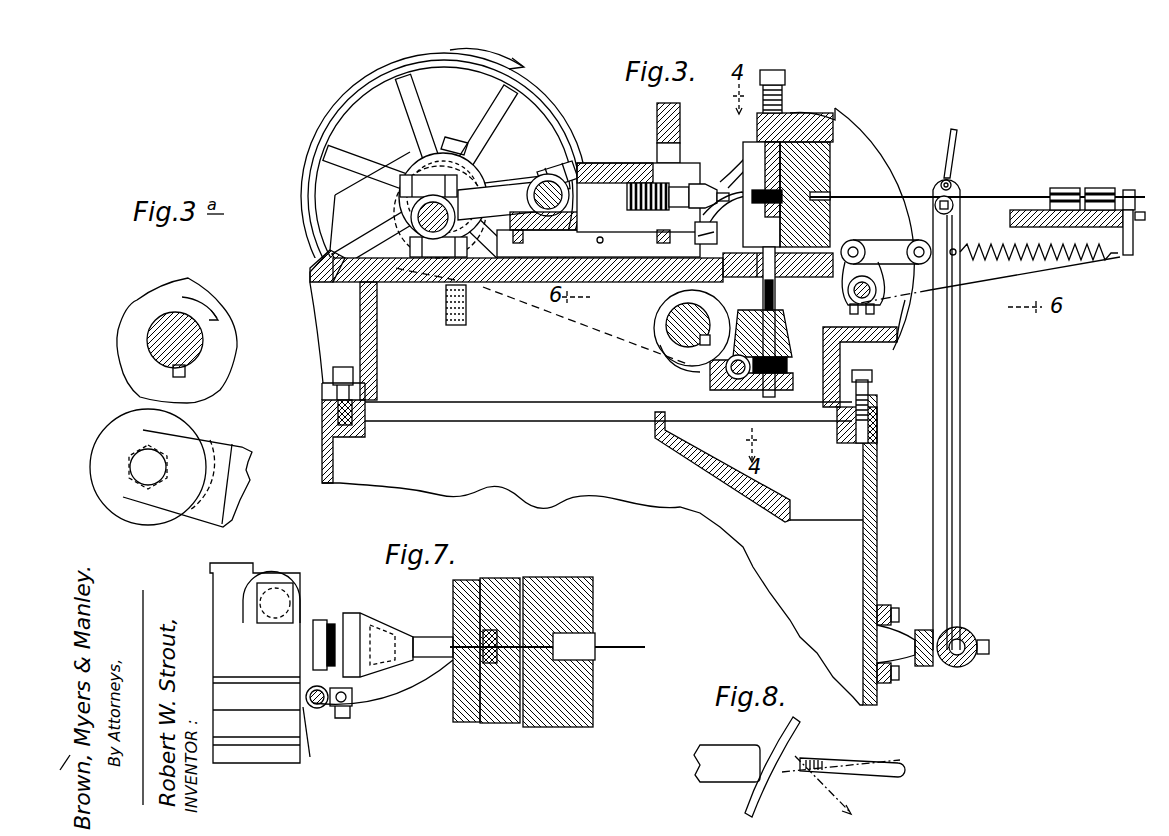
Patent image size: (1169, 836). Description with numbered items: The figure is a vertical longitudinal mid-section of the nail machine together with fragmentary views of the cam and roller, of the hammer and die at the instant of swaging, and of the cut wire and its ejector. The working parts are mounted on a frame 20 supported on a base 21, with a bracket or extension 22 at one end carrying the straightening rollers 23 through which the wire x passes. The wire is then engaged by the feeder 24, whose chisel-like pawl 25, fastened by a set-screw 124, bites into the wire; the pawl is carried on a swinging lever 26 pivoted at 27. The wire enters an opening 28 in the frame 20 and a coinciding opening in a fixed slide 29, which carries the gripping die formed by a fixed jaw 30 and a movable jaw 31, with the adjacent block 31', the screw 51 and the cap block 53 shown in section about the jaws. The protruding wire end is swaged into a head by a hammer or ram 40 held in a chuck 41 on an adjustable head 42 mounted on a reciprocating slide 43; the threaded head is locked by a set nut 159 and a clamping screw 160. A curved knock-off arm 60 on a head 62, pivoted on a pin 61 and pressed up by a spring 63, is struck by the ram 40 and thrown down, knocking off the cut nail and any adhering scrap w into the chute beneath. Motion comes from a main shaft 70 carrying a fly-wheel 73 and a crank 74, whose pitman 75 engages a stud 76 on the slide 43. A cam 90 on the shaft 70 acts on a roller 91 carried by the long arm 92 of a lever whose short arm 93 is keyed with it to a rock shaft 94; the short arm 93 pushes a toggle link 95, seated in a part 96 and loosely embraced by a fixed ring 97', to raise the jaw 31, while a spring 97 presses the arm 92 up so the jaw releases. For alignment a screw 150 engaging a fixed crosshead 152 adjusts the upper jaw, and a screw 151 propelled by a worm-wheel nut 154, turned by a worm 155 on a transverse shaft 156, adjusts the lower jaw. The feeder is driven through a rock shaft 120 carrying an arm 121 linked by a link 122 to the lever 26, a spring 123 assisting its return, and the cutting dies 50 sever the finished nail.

In FIG. 3, the frame 20 is at (888, 144).
In FIG. 7, the frame 20 is at (582, 690).
In FIG. 3, the base 21 is at (618, 536).
In FIG. 3, the bracket or extension 22 is at (1012, 277).
In FIG. 3, the straightening rollers 23 is at (1097, 196).
In FIG. 3, the feeder 24 is at (957, 190).
In FIG. 3, the pawl 25 is at (956, 140).
In FIG. 3, the swinging arm or lever 26 is at (957, 356).
In FIG. 3, the pivot 27 is at (950, 665).
In FIG. 3, the opening 28 is at (830, 195).
In FIG. 7, the opening 28 is at (589, 646).
In FIG. 3, the fixed slide 29 is at (826, 158).
In FIG. 7, the fixed slide 29 is at (505, 726).
In FIG. 3, the fixed jaw 30 is at (756, 154).
In FIG. 7, the fixed jaw 30 is at (455, 600).
In FIG. 3, the movable jaw 31 is at (747, 267).
In FIG. 7, the movable jaw 31 is at (462, 740).
In FIG. 3, the block 31' is at (844, 213).
In FIG. 3, the hammer or ram 40 is at (727, 193).
In FIG. 7, the hammer or ram 40 is at (418, 636).
In FIG. 8, the hammer or ram 40 is at (731, 762).
In FIG. 7, the chuck 41 is at (375, 615).
In FIG. 3, the adjustable head 42 is at (640, 180).
In FIG. 7, the adjustable head 42 is at (336, 620).
In FIG. 3, the reciprocating slide 43 is at (604, 163).
In FIG. 7, the reciprocating slide 43 is at (255, 663).
In FIG. 3, the cutting dies 50 is at (730, 175).
In FIG. 3, the screw 51 is at (765, 203).
In FIG. 3, the cap block 53 is at (770, 122).
In FIG. 3, the knock-off arm 60 is at (748, 226).
In FIG. 7, the knock-off arm 60 is at (421, 692).
In FIG. 8, the knock-off arm 60 is at (762, 796).
In FIG. 3, the pin 61 is at (696, 231).
In FIG. 7, the pin 61 is at (308, 698).
In FIG. 7, the head 62 is at (347, 718).
In FIG. 7, the spring 63 is at (319, 737).
In FIG. 3A, the main shaft 70 is at (158, 326).
In FIG. 3, the fly-wheel 73 is at (356, 112).
In FIG. 3, the crank 74 is at (410, 219).
In FIG. 3, the pitman or connecting rod 75 is at (530, 188).
In FIG. 3, the stud 76 is at (555, 176).
In FIG. 3, the cam 90 is at (456, 146).
In FIG. 3A, the cam 90 is at (196, 291).
In FIG. 3, the roller 91 is at (406, 248).
In FIG. 3A, the roller 91 is at (110, 426).
In FIG. 3, the long arm 92 is at (598, 336).
In FIG. 3A, the long arm 92 is at (250, 450).
In FIG. 3, the short arm 93 is at (680, 368).
In FIG. 3, the rock shaft 94 is at (670, 318).
In FIG. 3, the toggle link 95 is at (775, 294).
In FIG. 3, the part 96 is at (790, 330).
In FIG. 3, the spring 97 is at (432, 305).
In FIG. 3, the threaded rod 97' is at (749, 299).
In FIG. 3, the rock shaft 120 is at (893, 308).
In FIG. 3, the arm 121 is at (850, 292).
In FIG. 3, the link 122 is at (885, 250).
In FIG. 3, the spring 123 is at (1068, 260).
In FIG. 3, the set-screw 124 is at (951, 182).
In FIG. 3, the screw 150 is at (784, 100).
In FIG. 3, the screw 151 is at (772, 392).
In FIG. 3, the fixed crosshead 152 is at (810, 118).
In FIG. 3, the nut 154 is at (788, 366).
In FIG. 3, the worm 155 is at (735, 380).
In FIG. 3, the transverse shaft 156 is at (712, 386).
In FIG. 7, the set nut 159 is at (303, 592).
In FIG. 3, the clamping screw 160 is at (657, 158).
In FIG. 7, the clamping screw 160 is at (276, 590).
In FIG. 3, the wire x is at (879, 185).
In FIG. 7, the wire x is at (547, 659).
In FIG. 8, the wire x is at (881, 761).
In FIG. 8, the scrap w is at (830, 767).